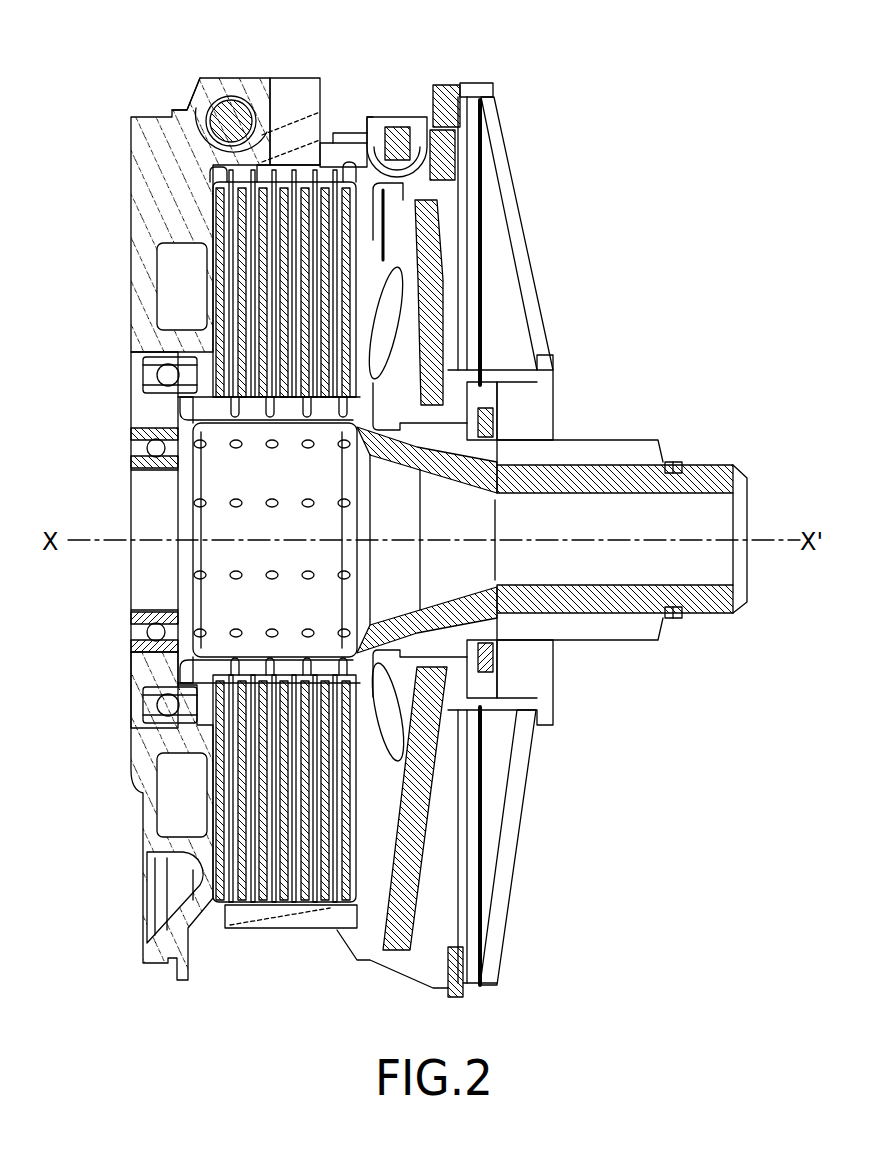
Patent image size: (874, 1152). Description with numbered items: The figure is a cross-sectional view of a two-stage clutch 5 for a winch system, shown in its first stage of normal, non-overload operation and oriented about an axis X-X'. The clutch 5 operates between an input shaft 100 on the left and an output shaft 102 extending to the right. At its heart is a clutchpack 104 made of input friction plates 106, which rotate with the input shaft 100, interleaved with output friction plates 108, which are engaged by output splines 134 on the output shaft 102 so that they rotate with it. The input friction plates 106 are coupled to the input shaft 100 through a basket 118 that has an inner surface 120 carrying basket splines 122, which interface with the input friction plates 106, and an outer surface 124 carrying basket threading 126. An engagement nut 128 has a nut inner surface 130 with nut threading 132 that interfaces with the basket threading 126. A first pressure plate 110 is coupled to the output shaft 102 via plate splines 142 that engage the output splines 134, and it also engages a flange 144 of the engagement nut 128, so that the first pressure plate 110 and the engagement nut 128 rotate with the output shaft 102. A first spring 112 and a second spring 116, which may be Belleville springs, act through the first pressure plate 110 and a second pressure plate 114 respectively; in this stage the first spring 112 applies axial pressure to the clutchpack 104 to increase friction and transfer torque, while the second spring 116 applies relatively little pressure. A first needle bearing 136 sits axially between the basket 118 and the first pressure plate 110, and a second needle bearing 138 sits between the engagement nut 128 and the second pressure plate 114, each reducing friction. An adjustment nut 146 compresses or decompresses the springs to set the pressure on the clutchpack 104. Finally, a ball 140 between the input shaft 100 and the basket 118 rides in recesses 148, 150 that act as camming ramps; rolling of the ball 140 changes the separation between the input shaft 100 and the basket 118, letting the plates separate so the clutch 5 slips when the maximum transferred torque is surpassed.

The clutch 5 is at (617, 60).
The input shaft 100 is at (142, 200).
The output shaft 102 is at (722, 480).
The clutchpack 104 is at (227, 291).
The input friction plates 106 is at (321, 168).
The output friction plates 108 is at (213, 396).
The first pressure plate 110 is at (405, 127).
The first spring 112 is at (433, 322).
The second pressure plate 114 is at (472, 155).
The second spring 116 is at (505, 208).
The basket 118 is at (292, 88).
The inner surface 120 is at (237, 187).
The basket splines 122 is at (267, 167).
The outer surface 124 is at (352, 140).
The basket threading 126 is at (370, 128).
The engagement nut 128 is at (458, 90).
The nut inner surface 130 is at (482, 125).
The nut threading 132 is at (418, 177).
The output splines 134 is at (223, 407).
The first needle bearing 136 is at (383, 223).
The second needle bearing 138 is at (465, 272).
The ball 140 is at (230, 118).
The plate splines 142 is at (392, 387).
The flange 144 is at (438, 98).
The adjustment nut 146 is at (545, 676).
The recess 148 is at (197, 102).
The recess 150 is at (237, 112).